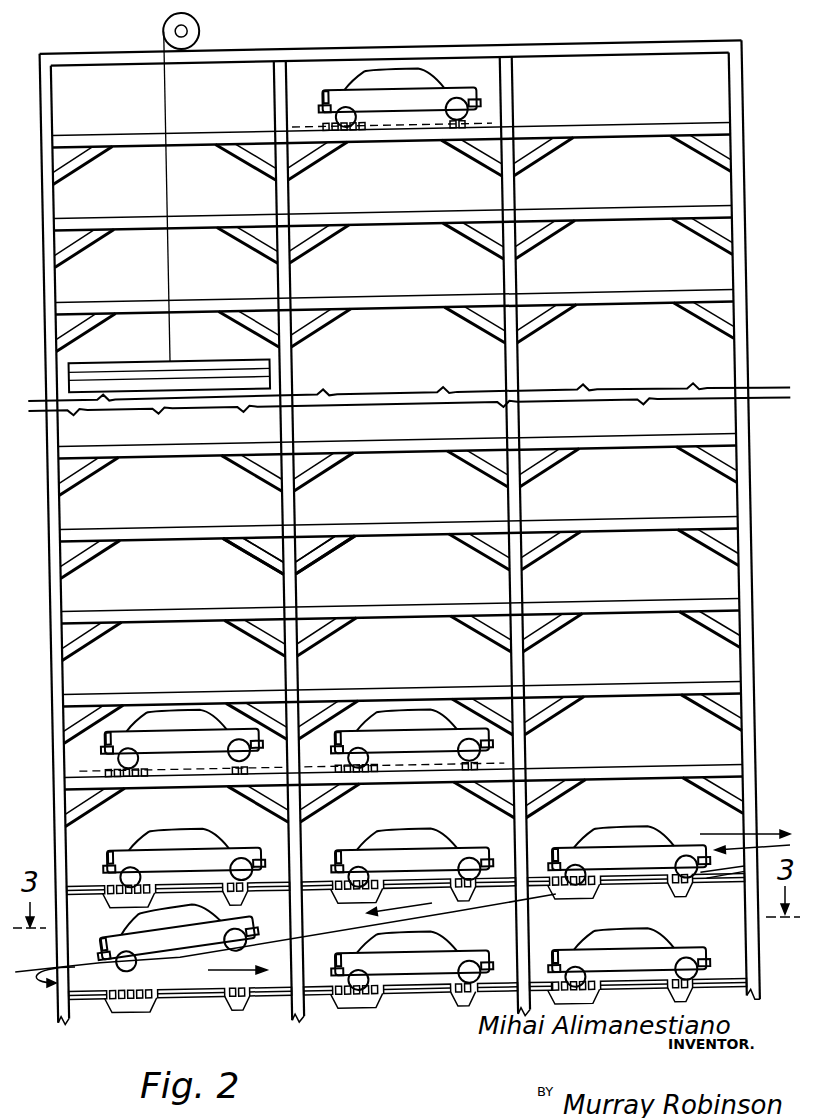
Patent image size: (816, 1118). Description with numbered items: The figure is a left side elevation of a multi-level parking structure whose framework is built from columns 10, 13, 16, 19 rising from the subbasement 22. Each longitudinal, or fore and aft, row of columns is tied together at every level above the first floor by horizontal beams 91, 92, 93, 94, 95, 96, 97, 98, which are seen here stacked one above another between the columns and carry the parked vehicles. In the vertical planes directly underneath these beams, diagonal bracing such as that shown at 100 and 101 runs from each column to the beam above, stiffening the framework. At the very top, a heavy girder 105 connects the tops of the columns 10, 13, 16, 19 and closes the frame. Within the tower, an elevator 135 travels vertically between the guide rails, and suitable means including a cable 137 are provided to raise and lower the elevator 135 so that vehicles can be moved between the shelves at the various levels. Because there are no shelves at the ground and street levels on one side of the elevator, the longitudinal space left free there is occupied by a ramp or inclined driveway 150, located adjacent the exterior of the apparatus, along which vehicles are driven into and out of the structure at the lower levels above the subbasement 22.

The column 10 is at (752, 663).
The column 13 is at (520, 663).
The column 16 is at (295, 666).
The column 19 is at (63, 666).
The subbasement 22 is at (384, 1033).
The horizontal beam 91 is at (628, 778).
The horizontal beam 92 is at (613, 695).
The horizontal beam 93 is at (608, 609).
The horizontal beam 94 is at (608, 529).
The horizontal beam 95 is at (596, 449).
The horizontal beam 96 is at (599, 302).
The horizontal beam 97 is at (594, 227).
The horizontal beam 98 is at (595, 141).
The diagonal bracing 100 is at (264, 548).
The diagonal bracing 101 is at (322, 546).
The heavy girder 105 is at (578, 60).
The elevator 135 is at (137, 365).
The cable 137 is at (174, 188).
The ramp 150 is at (454, 915).